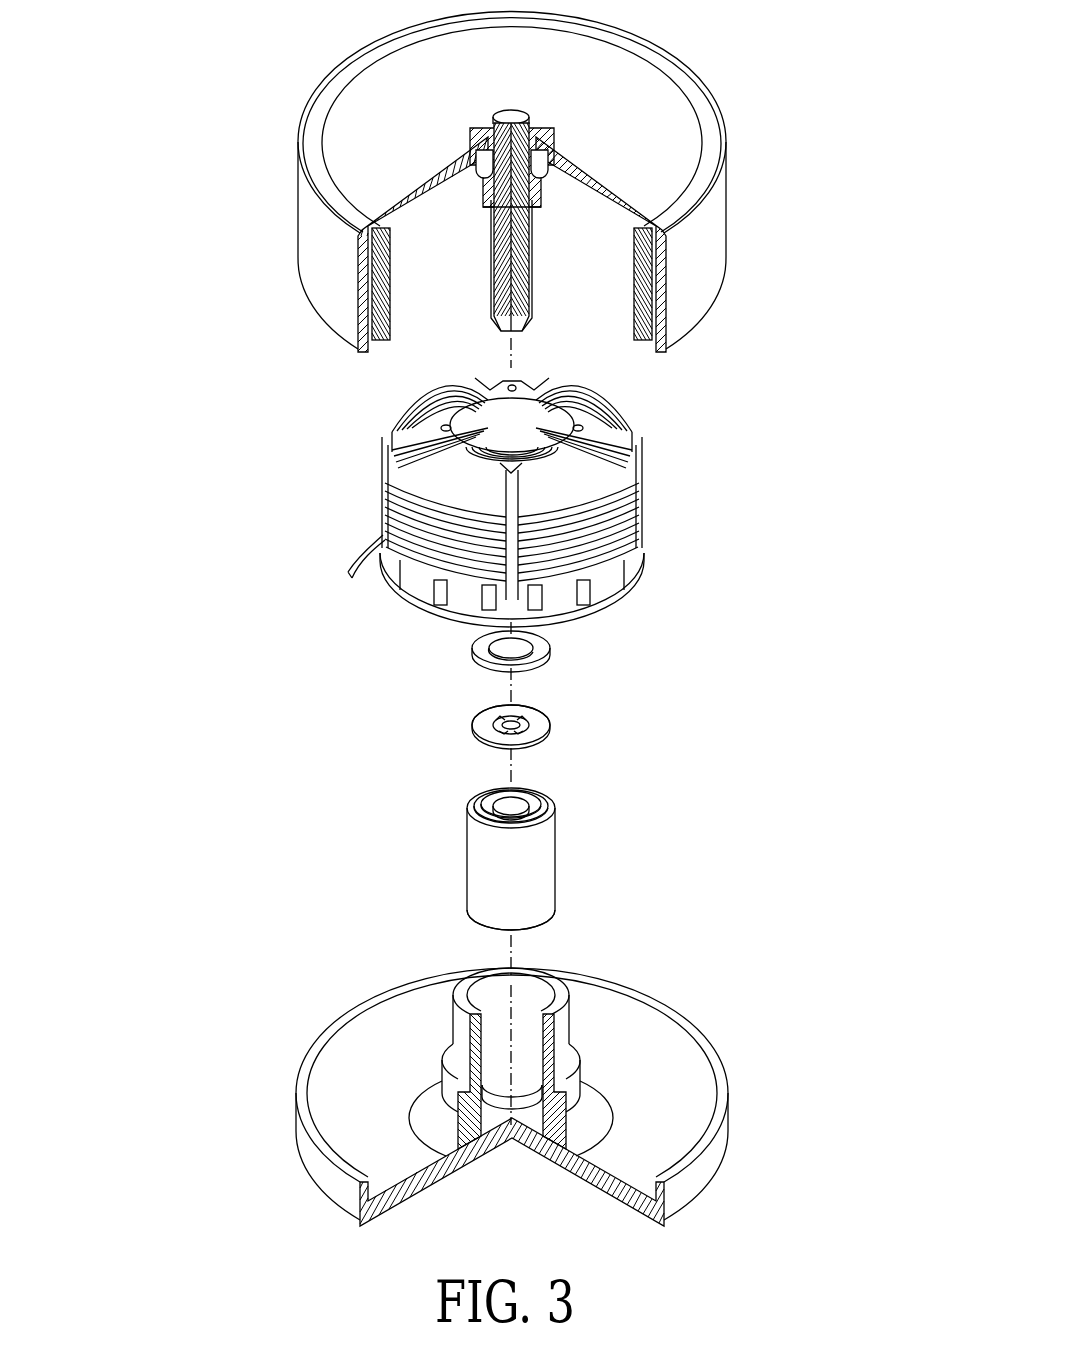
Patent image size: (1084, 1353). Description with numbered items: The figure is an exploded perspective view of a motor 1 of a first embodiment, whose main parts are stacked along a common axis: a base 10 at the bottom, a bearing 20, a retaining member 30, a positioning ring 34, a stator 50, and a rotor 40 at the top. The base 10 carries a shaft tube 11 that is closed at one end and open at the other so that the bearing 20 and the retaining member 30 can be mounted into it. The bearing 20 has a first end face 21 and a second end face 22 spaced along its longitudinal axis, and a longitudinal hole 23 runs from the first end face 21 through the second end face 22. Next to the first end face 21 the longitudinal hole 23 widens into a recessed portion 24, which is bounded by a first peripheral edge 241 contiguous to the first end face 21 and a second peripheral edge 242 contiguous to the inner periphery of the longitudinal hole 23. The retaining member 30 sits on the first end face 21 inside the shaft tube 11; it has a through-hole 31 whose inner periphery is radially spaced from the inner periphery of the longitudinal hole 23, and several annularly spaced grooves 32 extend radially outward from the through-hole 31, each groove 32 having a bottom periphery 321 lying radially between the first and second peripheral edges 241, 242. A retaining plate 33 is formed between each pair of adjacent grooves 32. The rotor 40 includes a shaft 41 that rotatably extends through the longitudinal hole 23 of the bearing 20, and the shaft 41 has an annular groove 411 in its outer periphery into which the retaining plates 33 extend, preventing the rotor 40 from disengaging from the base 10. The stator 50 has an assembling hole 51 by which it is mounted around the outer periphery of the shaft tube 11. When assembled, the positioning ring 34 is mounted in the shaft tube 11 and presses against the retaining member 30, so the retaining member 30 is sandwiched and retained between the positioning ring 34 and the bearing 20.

The motor 1 is at (283, 96).
The base 10 is at (702, 1170).
The shaft tube 11 is at (562, 1032).
The bearing 20 is at (540, 860).
The first end face 21 is at (545, 810).
The second end face 22 is at (543, 925).
The longitudinal hole 23 is at (518, 805).
The recessed portion 24 is at (483, 795).
The first peripheral edge 241 is at (523, 797).
The second peripheral edge 242 is at (473, 805).
The retaining member 30 is at (483, 733).
The through-hole 31 is at (497, 720).
The grooves 32 is at (533, 723).
The bottom periphery 321 is at (527, 722).
The retaining plate 33 is at (522, 718).
The positioning ring 34 is at (543, 648).
The rotor 40 is at (653, 75).
The shaft 41 is at (520, 300).
The annular groove 411 is at (527, 200).
The stator 50 is at (400, 430).
The assembling hole 51 is at (468, 430).